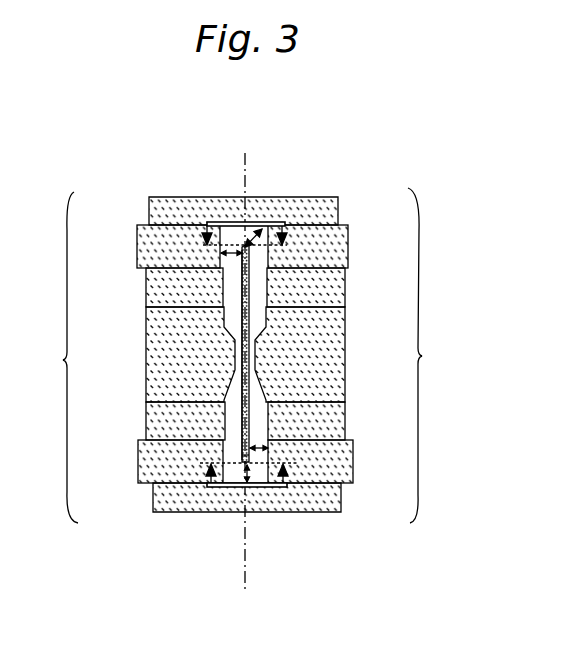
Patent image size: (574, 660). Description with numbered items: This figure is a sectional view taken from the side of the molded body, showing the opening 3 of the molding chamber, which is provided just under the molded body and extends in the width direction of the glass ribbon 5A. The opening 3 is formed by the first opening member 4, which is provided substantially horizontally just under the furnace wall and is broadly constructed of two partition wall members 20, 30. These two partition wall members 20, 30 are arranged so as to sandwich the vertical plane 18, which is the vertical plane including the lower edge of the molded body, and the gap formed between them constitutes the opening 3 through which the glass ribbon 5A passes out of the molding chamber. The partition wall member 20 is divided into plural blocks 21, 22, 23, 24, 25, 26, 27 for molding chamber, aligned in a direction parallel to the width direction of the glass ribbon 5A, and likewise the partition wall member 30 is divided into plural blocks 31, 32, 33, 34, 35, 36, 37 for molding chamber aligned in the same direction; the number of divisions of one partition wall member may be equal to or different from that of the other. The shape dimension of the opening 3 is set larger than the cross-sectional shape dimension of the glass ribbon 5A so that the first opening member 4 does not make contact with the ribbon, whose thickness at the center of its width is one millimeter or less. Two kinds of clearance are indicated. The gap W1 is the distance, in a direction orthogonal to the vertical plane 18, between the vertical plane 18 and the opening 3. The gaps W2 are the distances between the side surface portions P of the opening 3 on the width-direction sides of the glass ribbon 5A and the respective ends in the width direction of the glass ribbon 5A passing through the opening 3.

The opening of the molding chamber 3 is at (230, 411).
The first opening member 4 is at (73, 174).
The glass ribbon 5A is at (250, 290).
The vertical plane 18 is at (250, 587).
The partition wall member 20 is at (36, 369).
The block for molding chamber 21 is at (152, 219).
The block for molding chamber 22 is at (156, 257).
The block for molding chamber 23 is at (160, 295).
The block for molding chamber 24 is at (165, 357).
The block for molding chamber 25 is at (165, 427).
The block for molding chamber 26 is at (160, 466).
The block for molding chamber 27 is at (165, 501).
The partition wall member 30 is at (429, 369).
The block for molding chamber 31 is at (328, 214).
The block for molding chamber 32 is at (328, 252).
The block for molding chamber 33 is at (330, 294).
The block for molding chamber 34 is at (330, 357).
The block for molding chamber 35 is at (330, 428).
The block for molding chamber 36 is at (330, 466).
The block for molding chamber 37 is at (330, 502).
The side surface portion P is at (233, 222).
The gap W1 is at (308, 540).
The gap W2 is at (268, 540).